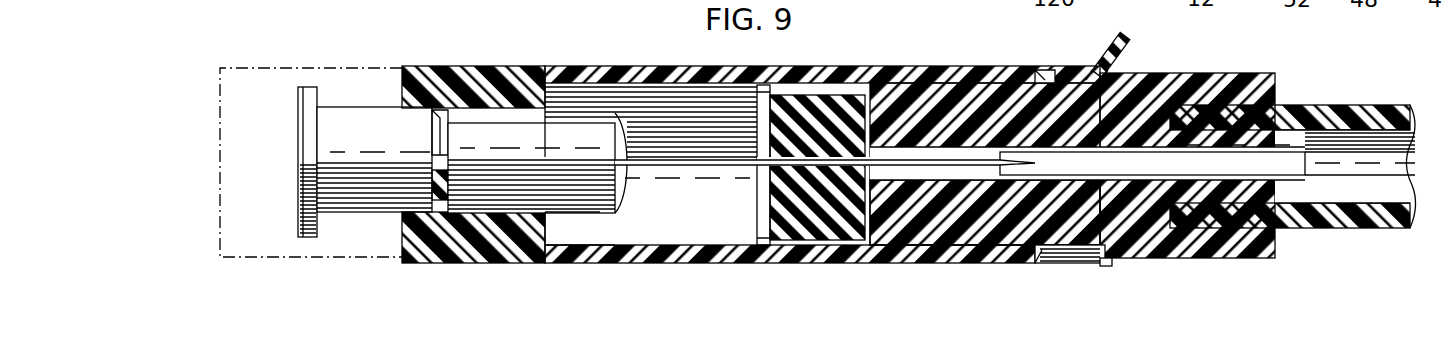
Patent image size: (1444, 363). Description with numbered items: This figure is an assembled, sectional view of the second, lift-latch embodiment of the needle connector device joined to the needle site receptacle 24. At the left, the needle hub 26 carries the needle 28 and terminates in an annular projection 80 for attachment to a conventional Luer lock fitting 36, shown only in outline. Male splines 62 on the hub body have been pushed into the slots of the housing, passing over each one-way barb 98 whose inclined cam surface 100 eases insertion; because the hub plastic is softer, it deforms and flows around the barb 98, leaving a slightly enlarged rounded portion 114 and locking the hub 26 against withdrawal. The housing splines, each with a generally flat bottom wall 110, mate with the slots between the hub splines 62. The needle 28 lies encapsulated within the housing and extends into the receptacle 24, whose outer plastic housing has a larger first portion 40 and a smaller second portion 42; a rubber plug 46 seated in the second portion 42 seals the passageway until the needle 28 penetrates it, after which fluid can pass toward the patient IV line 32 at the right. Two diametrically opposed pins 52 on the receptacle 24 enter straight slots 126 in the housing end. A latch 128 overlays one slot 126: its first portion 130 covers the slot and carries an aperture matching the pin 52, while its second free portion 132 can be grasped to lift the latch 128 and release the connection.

The needle site receptacle 24 is at (913, 200).
The needle hub 26 is at (343, 117).
The needle 28 is at (700, 165).
The IV line 32 is at (1333, 110).
The Luer lock fitting 36 is at (253, 68).
The first portion 40 is at (1225, 82).
The second portion 42 is at (972, 232).
The rubber plug 46 is at (845, 110).
The pins 52 is at (1033, 67).
The male splines 62 is at (477, 100).
The annular projection 80 is at (307, 170).
The one-way barb 98 is at (532, 207).
The cam surface 100 is at (485, 207).
The bottom wall 110 is at (507, 122).
The rounded portion 114 is at (583, 213).
The straight slots 126 is at (1100, 266).
The latch 128 is at (903, 77).
The first portion 130 is at (955, 66).
The second free portion 132 is at (1132, 52).